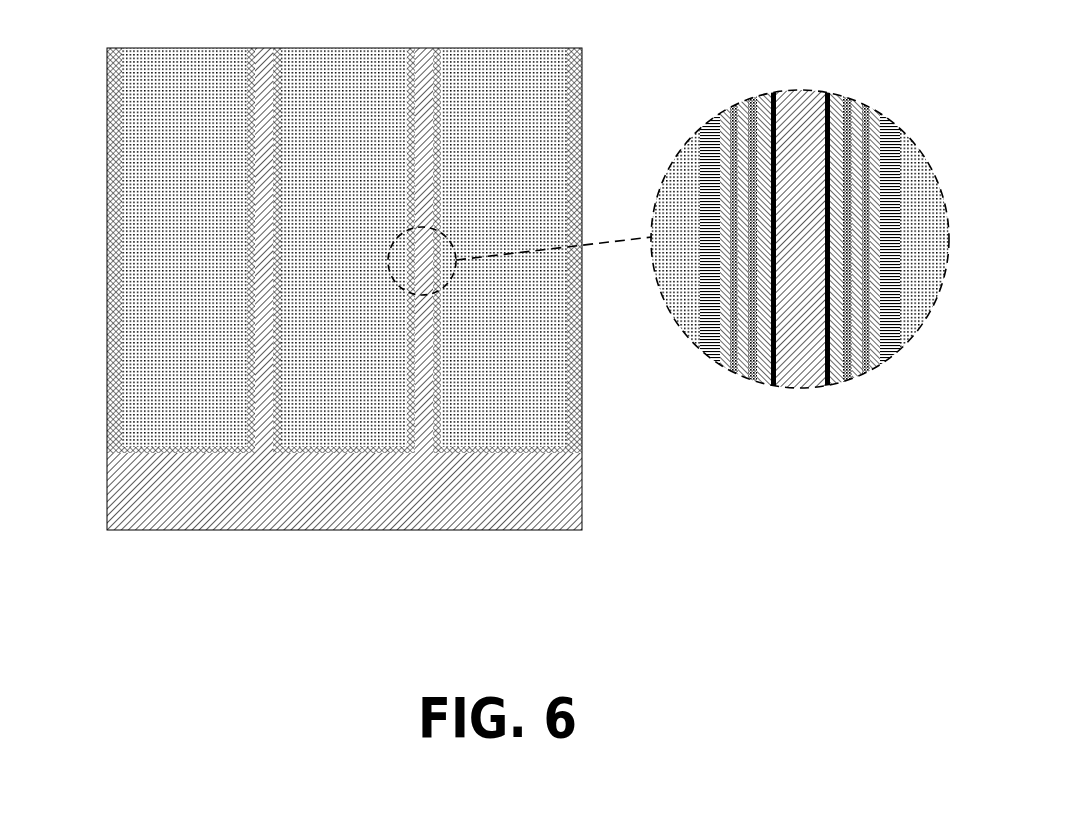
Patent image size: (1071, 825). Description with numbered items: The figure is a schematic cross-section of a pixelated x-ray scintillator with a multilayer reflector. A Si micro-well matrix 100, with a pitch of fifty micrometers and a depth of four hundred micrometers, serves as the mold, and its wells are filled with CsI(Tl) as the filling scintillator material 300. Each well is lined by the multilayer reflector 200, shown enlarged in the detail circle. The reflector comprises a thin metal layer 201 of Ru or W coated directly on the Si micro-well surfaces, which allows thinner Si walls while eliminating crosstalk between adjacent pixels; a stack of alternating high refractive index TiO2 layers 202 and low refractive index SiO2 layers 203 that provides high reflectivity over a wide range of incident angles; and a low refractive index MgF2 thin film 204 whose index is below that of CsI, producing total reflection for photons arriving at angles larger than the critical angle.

The Si micro-well matrix 100 is at (108, 485).
The multilayer reflector 200 is at (108, 407).
The filling scintillator material 300 is at (170, 280).
The metal layer 201 is at (775, 392).
The high refractive index layer 202 is at (746, 379).
The low refractive index layer 203 is at (866, 381).
The low refractive index thin film 204 is at (891, 359).